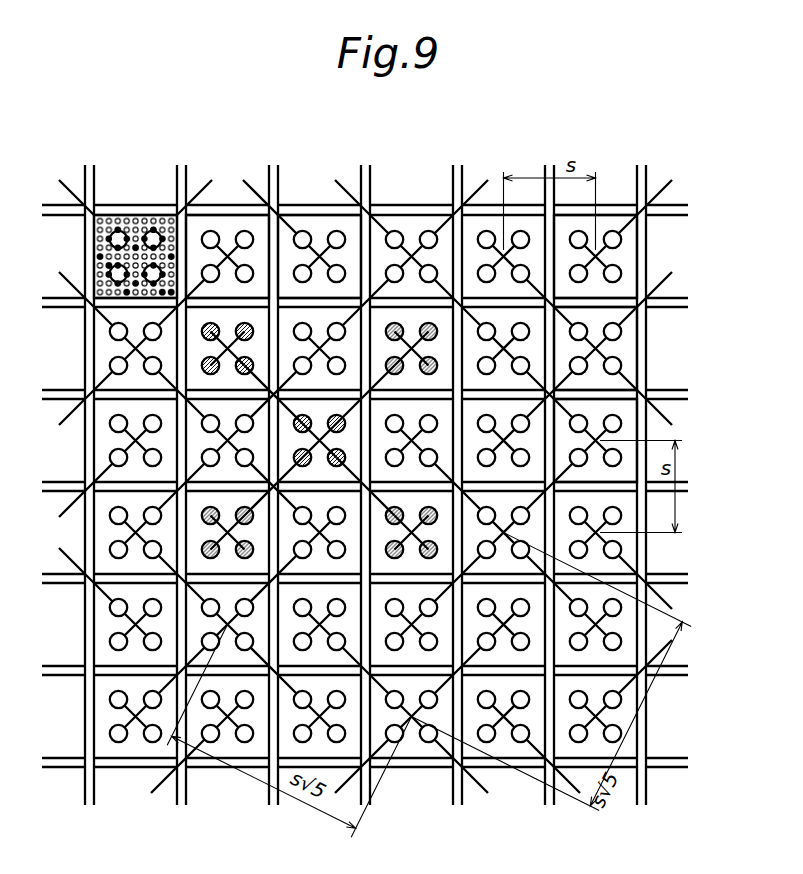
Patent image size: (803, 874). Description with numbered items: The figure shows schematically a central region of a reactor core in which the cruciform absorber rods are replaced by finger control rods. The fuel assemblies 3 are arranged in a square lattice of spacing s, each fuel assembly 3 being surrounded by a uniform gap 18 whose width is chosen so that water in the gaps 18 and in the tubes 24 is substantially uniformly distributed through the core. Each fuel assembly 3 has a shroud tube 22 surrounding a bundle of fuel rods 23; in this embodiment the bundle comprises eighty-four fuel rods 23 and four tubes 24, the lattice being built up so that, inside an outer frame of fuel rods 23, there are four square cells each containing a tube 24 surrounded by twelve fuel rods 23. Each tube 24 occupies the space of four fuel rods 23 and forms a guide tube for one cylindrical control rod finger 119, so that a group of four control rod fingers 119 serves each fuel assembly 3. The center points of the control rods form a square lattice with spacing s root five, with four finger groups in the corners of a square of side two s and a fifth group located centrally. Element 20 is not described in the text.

The fuel assembly 3 is at (630, 438).
The gap 18 is at (698, 391).
The control rod finger 119 is at (247, 364).
The contact pads 20 is at (352, 470).
The shroud tube 22 is at (100, 229).
The fuel rod 23 is at (99, 255).
The tube 24 is at (110, 273).